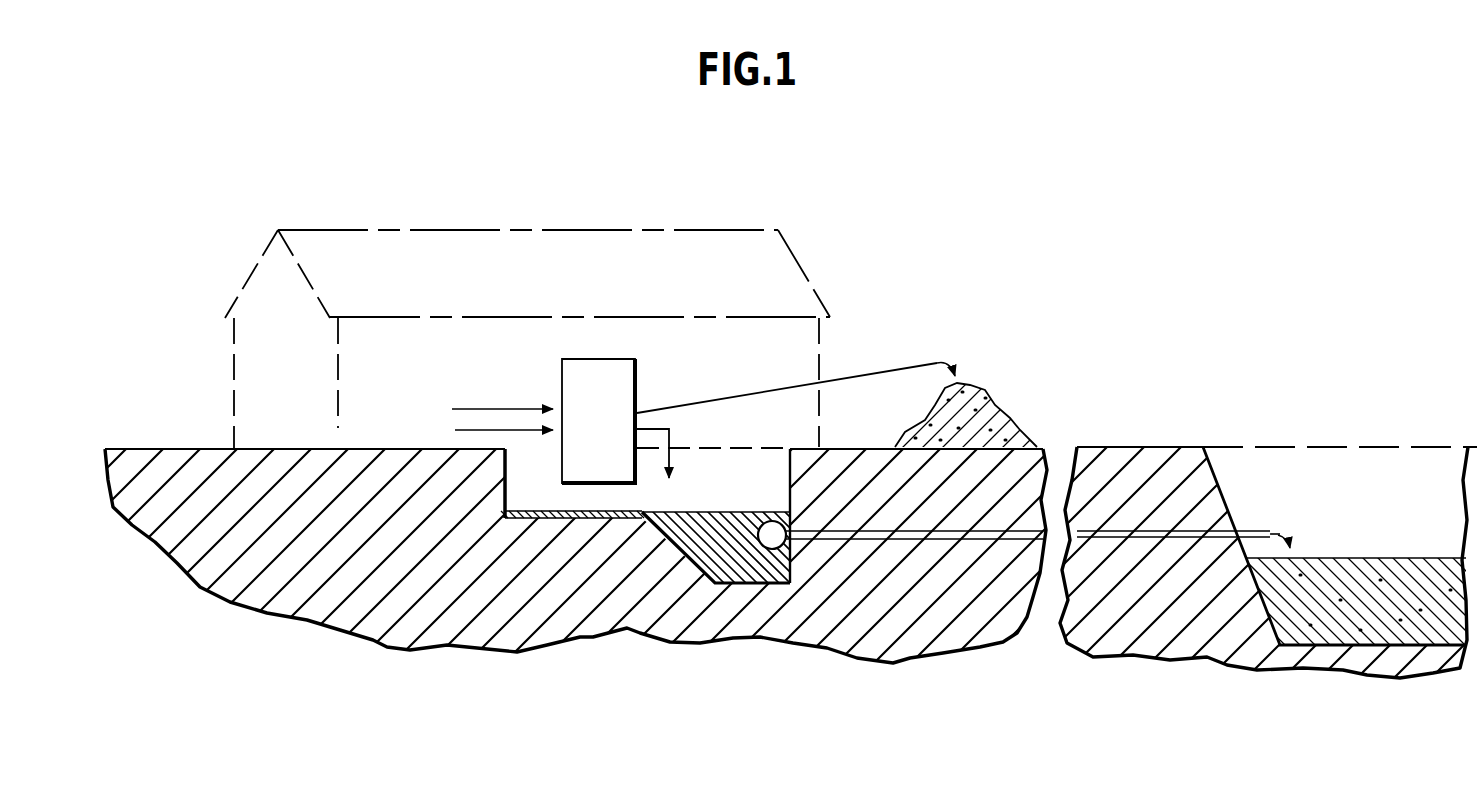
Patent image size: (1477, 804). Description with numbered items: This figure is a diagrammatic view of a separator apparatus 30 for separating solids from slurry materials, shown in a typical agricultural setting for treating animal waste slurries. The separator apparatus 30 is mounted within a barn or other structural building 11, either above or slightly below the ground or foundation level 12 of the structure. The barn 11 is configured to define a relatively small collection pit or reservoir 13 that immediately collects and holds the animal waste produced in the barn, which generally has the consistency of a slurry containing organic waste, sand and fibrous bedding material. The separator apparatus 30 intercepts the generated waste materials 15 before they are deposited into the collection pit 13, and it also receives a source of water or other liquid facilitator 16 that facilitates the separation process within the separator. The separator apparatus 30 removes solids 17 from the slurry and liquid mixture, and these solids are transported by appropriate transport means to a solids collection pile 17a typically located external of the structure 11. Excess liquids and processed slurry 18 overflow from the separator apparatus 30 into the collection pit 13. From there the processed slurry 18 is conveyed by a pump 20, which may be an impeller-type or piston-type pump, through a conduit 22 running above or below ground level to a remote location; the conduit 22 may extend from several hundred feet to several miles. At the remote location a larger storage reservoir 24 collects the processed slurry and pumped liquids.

The barn 11 is at (598, 233).
The ground or foundation level 12 is at (153, 462).
The collection pit 13 is at (548, 510).
The waste materials 15 is at (469, 437).
The source of water 16 is at (478, 412).
The solids 17 is at (748, 400).
The solids collection pile 17a is at (983, 408).
The excess liquids 18 is at (673, 453).
The pump 20 is at (795, 519).
The conduit 22 is at (890, 541).
The storage reservoir 24 is at (1333, 555).
The separator apparatus 30 is at (558, 361).